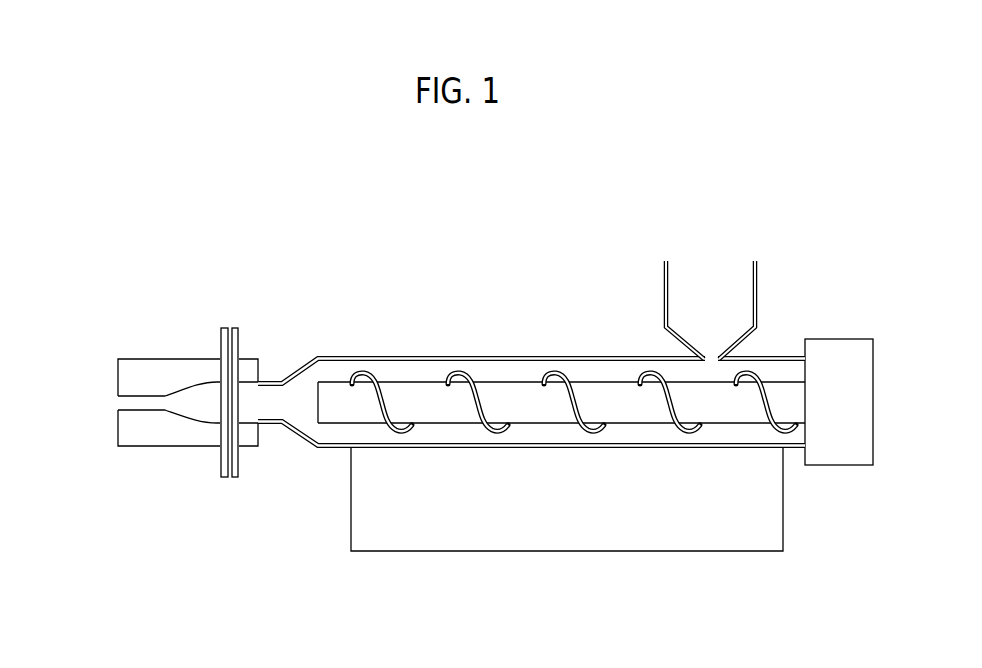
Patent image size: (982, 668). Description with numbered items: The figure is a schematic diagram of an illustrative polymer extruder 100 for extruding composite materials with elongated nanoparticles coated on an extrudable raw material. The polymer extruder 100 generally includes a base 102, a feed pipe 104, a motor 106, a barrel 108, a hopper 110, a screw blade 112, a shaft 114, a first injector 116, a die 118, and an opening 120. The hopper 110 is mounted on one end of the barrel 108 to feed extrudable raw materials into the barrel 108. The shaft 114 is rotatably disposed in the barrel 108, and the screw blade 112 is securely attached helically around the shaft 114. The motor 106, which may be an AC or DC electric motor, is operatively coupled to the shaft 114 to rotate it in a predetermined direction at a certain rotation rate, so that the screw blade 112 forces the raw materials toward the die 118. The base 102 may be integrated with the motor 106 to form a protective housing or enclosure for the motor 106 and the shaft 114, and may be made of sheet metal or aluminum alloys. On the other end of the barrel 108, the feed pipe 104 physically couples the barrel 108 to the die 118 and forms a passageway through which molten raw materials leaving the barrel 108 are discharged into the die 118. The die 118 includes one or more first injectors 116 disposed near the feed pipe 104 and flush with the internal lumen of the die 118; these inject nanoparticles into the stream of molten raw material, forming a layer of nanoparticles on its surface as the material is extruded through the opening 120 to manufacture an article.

The polymer extruder 100 is at (306, 212).
The base 102 is at (740, 553).
The feed pipe 104 is at (295, 438).
The motor 106 is at (838, 338).
The barrel 108 is at (781, 355).
The hopper 110 is at (709, 264).
The screw blade 112 is at (478, 372).
The shaft 114 is at (409, 381).
The first injector 116 is at (227, 327).
The die 118 is at (145, 358).
The opening 120 is at (117, 402).